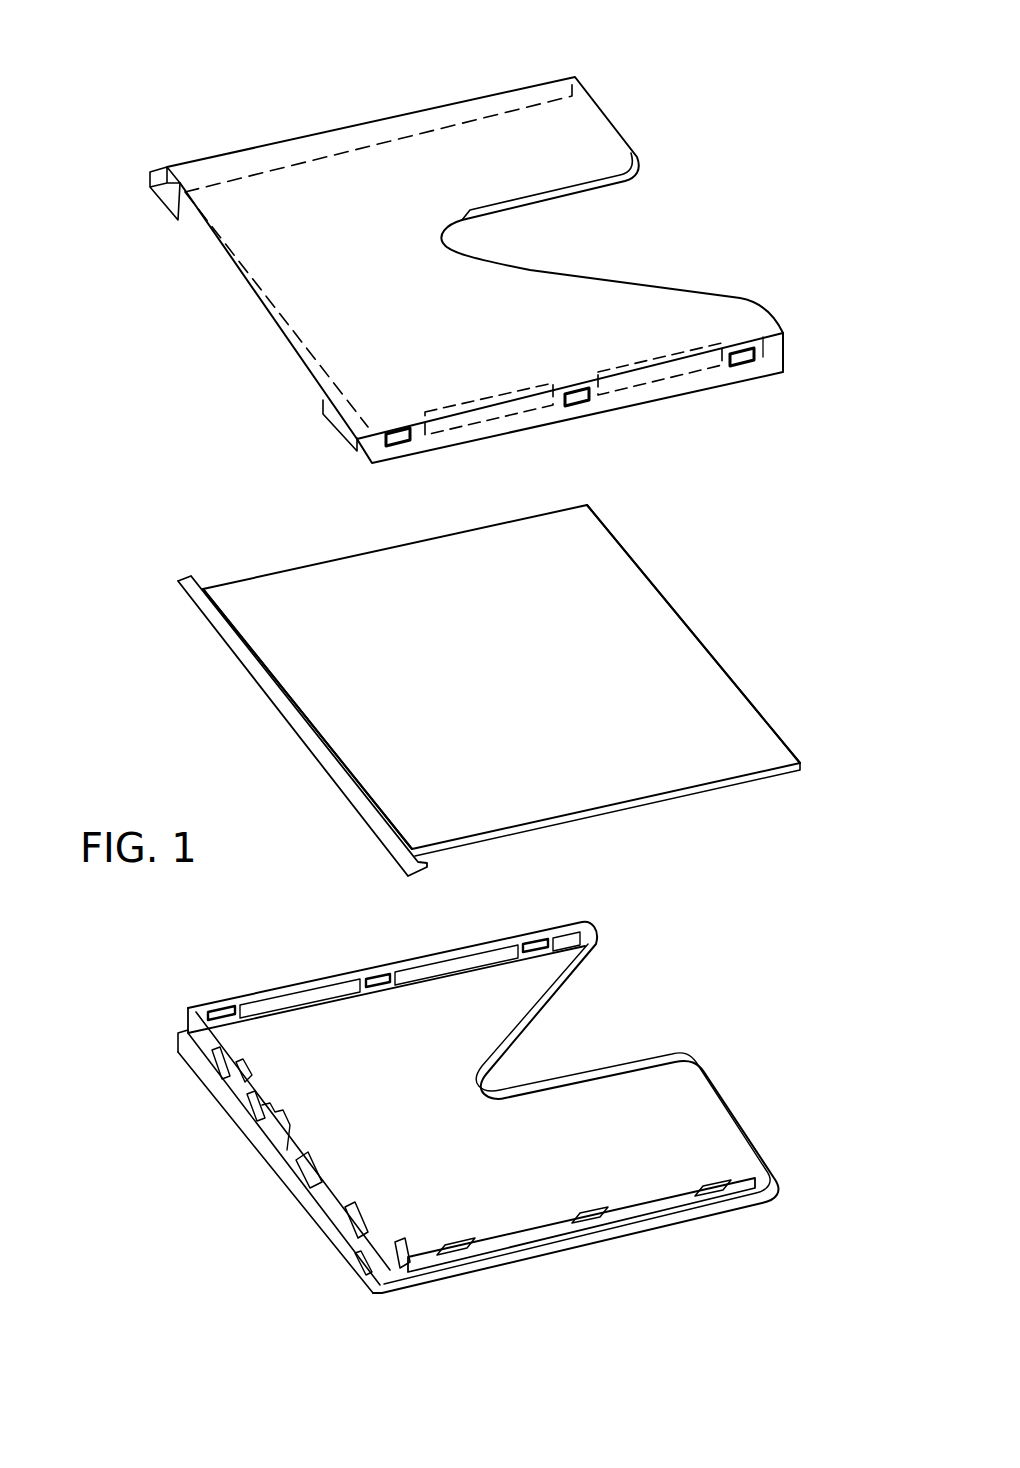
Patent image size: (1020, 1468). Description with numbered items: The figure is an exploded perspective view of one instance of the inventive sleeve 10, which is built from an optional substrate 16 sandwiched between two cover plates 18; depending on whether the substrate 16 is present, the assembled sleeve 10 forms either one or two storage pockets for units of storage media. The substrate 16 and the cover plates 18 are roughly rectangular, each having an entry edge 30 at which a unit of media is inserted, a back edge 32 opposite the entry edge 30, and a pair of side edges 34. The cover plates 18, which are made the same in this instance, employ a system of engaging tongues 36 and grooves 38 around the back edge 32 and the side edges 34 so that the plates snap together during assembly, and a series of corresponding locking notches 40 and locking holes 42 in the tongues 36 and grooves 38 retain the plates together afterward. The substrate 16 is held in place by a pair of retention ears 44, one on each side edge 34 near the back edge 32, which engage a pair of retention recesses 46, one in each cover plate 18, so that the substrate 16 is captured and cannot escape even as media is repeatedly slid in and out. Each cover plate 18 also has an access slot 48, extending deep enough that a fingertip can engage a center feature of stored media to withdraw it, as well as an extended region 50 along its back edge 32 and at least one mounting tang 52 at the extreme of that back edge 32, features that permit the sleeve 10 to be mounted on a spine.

The sleeve 10 is at (249, 82).
The substrate 16 is at (481, 677).
The cover plate 18 is at (360, 234).
The entry edge 30 is at (602, 112).
The back edge 32 is at (248, 310).
The side edge 34 is at (425, 106).
The engaging tongue 36 is at (340, 1185).
The groove 38 is at (638, 358).
The locking notch 40 is at (312, 1163).
The locking hole 42 is at (540, 935).
The retention ear 44 is at (197, 590).
The retention recess 46 is at (393, 1240).
The access slot 48 is at (668, 194).
The extended region 50 is at (166, 170).
The mounting tang 52 is at (160, 200).